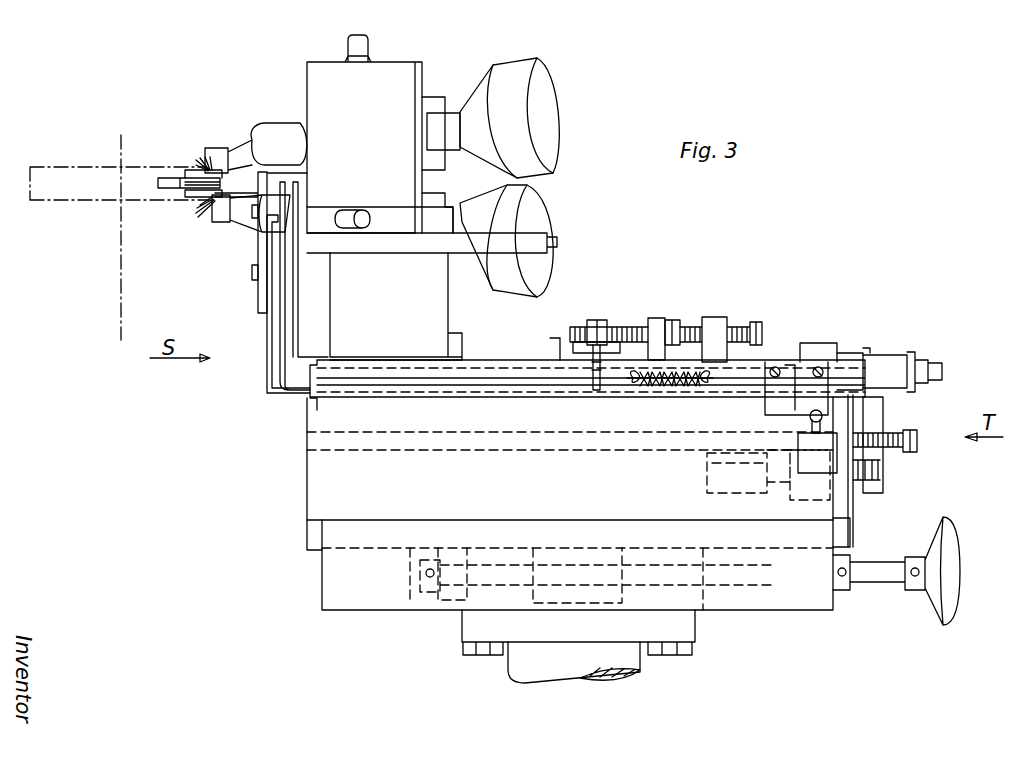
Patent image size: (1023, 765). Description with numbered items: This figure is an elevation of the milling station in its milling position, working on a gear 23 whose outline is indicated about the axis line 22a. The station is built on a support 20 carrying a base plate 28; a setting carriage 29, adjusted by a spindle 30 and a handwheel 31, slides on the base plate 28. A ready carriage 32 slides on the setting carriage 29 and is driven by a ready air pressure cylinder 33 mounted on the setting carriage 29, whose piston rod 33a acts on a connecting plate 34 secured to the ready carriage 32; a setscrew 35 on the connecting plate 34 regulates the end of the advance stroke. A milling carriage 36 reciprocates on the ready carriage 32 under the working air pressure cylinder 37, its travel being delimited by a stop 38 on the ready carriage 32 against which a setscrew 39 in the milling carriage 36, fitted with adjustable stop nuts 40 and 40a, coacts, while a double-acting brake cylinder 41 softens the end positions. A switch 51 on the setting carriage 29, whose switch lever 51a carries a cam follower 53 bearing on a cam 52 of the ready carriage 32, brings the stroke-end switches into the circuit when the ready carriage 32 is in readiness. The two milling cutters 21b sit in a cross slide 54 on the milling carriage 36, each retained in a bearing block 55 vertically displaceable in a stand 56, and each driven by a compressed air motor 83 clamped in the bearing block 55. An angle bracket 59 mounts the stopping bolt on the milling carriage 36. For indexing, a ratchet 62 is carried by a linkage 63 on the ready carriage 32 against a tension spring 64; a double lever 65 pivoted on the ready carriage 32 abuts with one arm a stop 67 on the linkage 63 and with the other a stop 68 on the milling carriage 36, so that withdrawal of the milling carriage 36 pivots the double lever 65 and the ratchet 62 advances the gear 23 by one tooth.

The support 20 is at (640, 666).
The milling cutter 21b is at (196, 163).
The axis line 22a is at (121, 282).
The gear 23 is at (83, 167).
The base plate 28 is at (365, 610).
The setting carriage 29 is at (305, 493).
The spindle 30 is at (640, 588).
The handwheel 31 is at (958, 566).
The ready carriage 32 is at (305, 412).
The ready air pressure cylinder 33 is at (725, 490).
The piston rod 33a is at (846, 482).
The connecting plate 34 is at (882, 488).
The setscrew 35 is at (917, 440).
The milling carriage 36 is at (492, 359).
The working air pressure cylinder 37 is at (880, 353).
The stop 38 is at (658, 318).
The setscrew 39 is at (705, 326).
The stop nut 40 is at (597, 321).
The stop nut 40a is at (684, 320).
The brake cylinder 41 is at (893, 360).
The switch 51 is at (798, 445).
The switch lever 51a is at (822, 428).
The cam 52 is at (781, 362).
The cam follower 53 is at (822, 410).
The cross slide 54 is at (398, 242).
The bearing block 55 is at (433, 101).
The stand 56 is at (385, 66).
The angle bracket 59 is at (287, 299).
The ratchet 62 is at (165, 186).
The linkage 63 is at (270, 322).
The tension spring 64 is at (668, 386).
The double lever 65 is at (576, 330).
The stop 67 is at (596, 380).
The stop 68 is at (554, 345).
The compressed air motor 83 is at (558, 190).